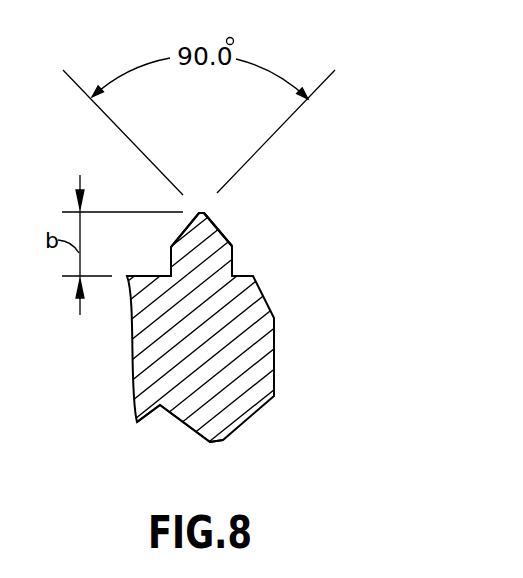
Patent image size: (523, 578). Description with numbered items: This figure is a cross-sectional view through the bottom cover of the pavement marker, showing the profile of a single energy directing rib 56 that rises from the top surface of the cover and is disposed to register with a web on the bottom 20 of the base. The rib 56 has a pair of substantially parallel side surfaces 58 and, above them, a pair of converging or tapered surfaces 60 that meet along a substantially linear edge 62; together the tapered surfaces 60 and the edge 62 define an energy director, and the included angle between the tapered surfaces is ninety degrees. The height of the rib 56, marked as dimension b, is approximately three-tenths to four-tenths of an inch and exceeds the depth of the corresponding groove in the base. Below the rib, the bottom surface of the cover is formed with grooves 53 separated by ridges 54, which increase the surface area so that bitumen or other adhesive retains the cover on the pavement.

The bottom 20 is at (142, 424).
The grooves 53 is at (152, 410).
The ridges 54 is at (216, 442).
The energy directing rib 56 is at (238, 205).
The side surfaces 58 is at (169, 262).
The converging surfaces 60 is at (184, 226).
The linear edge 62 is at (200, 209).